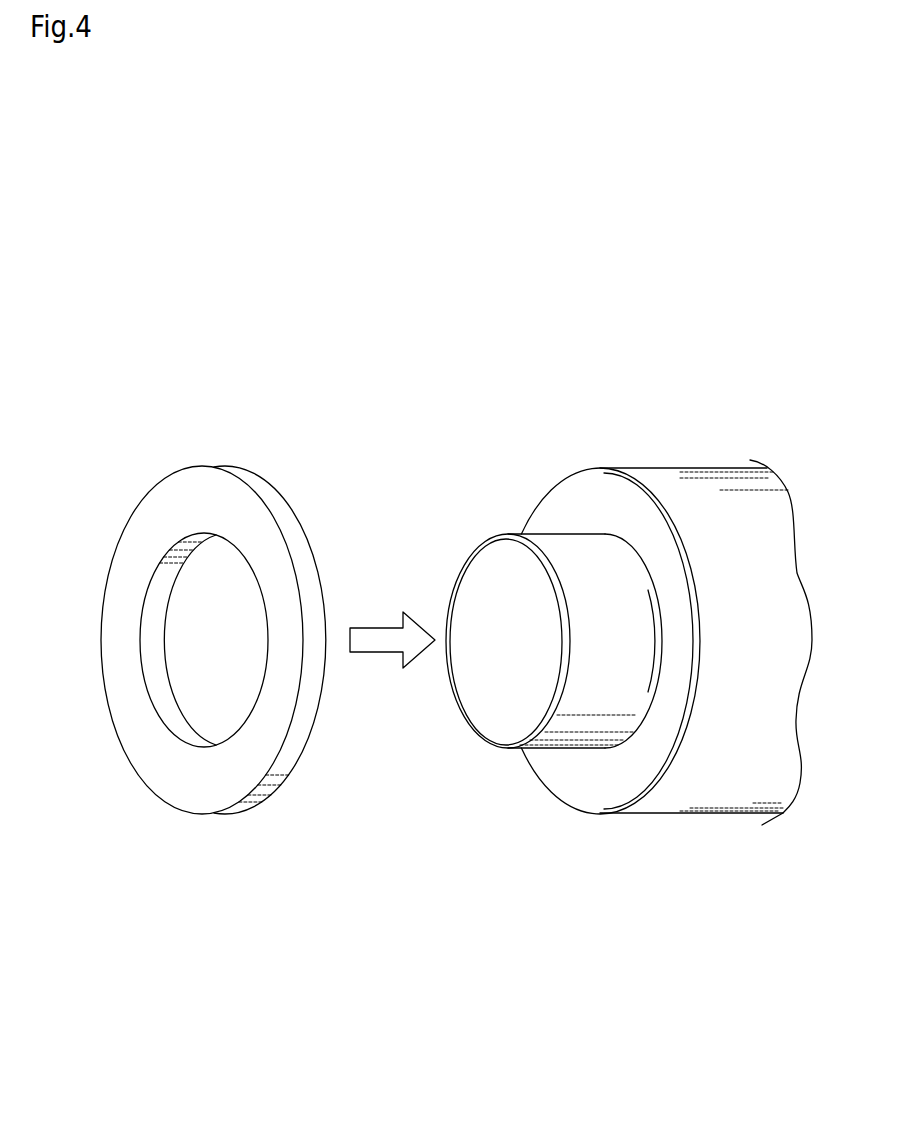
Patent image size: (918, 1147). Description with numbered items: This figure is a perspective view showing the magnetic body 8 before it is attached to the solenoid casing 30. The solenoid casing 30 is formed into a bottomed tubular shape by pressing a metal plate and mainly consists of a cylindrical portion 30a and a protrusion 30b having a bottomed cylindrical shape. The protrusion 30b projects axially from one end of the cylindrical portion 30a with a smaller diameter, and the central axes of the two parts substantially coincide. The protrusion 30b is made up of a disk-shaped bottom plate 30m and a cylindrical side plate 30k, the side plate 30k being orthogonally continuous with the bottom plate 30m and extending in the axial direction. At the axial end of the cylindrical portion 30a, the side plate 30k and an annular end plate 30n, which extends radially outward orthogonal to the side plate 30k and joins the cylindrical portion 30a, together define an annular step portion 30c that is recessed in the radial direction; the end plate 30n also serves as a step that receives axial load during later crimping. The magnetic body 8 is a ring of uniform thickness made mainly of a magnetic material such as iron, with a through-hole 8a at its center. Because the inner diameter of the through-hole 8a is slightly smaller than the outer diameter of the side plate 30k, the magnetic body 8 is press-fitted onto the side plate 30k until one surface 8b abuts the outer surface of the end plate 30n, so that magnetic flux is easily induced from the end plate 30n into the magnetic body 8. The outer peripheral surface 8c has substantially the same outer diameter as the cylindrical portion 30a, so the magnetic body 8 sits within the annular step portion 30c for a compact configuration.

The magnetic body 8 is at (218, 452).
The through-hole 8a is at (248, 565).
The one surface 8b is at (200, 783).
The outer peripheral surface 8c is at (290, 512).
The solenoid casing 30 is at (680, 452).
The cylindrical portion 30a is at (713, 787).
The protrusion 30b is at (408, 817).
The annular step portion 30c is at (555, 930).
The side plate 30k is at (582, 742).
The bottom plate 30m is at (507, 708).
The end plate 30n is at (608, 772).